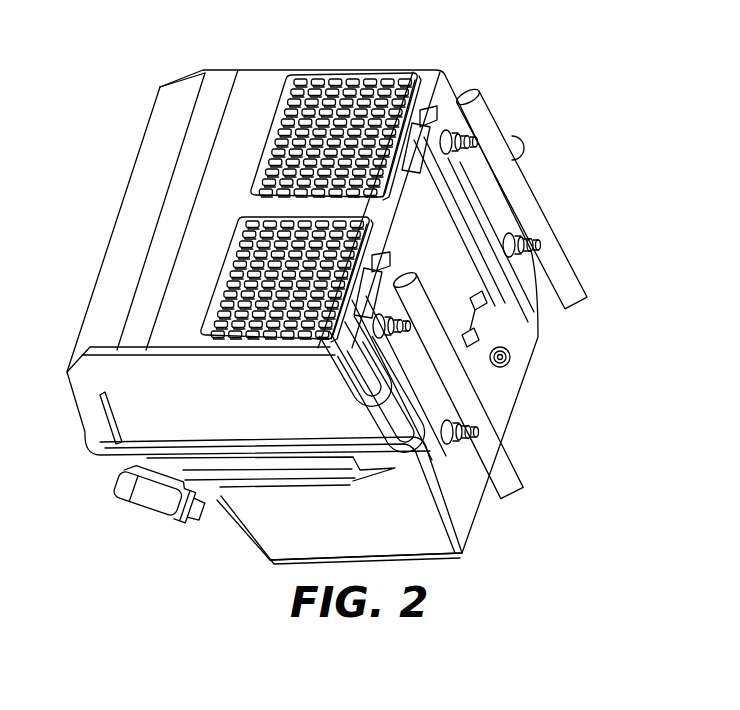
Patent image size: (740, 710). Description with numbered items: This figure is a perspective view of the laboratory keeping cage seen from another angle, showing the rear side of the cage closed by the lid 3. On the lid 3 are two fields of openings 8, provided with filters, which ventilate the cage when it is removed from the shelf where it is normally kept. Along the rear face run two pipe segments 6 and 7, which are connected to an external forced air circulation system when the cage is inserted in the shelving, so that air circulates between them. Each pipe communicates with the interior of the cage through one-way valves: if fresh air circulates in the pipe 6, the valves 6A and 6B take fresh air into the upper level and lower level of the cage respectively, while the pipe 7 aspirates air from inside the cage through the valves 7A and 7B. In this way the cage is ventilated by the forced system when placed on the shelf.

The lid 3 is at (255, 70).
The openings 8 is at (333, 76).
The pipe segment 6 is at (489, 118).
The valve 6A is at (444, 130).
The valve 6B is at (536, 250).
The pipe segment 7 is at (515, 470).
The valve 7A is at (408, 340).
The valve 7B is at (474, 438).